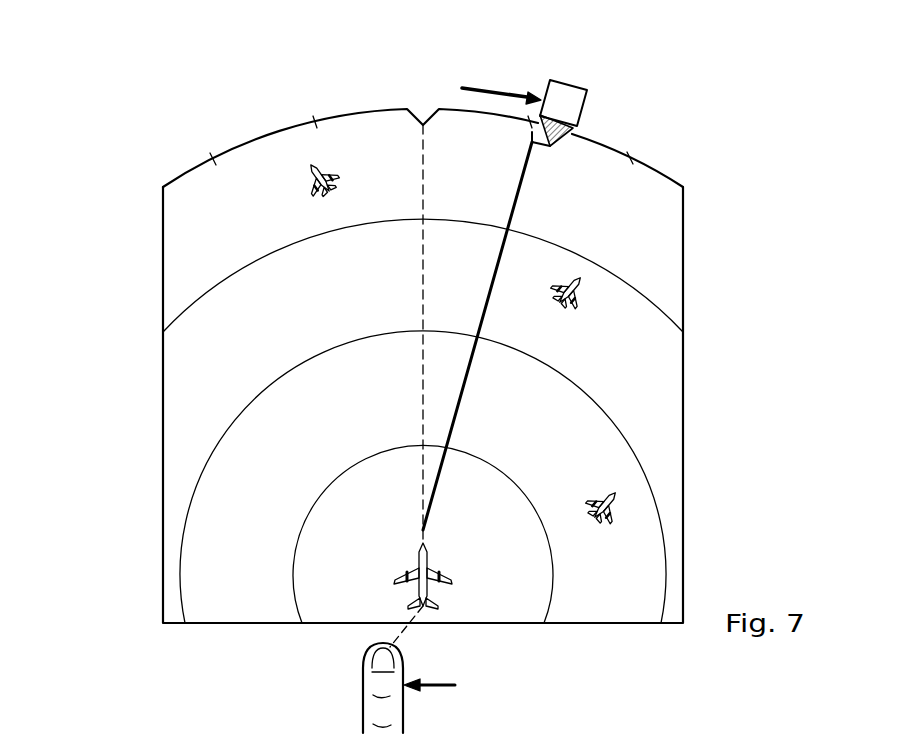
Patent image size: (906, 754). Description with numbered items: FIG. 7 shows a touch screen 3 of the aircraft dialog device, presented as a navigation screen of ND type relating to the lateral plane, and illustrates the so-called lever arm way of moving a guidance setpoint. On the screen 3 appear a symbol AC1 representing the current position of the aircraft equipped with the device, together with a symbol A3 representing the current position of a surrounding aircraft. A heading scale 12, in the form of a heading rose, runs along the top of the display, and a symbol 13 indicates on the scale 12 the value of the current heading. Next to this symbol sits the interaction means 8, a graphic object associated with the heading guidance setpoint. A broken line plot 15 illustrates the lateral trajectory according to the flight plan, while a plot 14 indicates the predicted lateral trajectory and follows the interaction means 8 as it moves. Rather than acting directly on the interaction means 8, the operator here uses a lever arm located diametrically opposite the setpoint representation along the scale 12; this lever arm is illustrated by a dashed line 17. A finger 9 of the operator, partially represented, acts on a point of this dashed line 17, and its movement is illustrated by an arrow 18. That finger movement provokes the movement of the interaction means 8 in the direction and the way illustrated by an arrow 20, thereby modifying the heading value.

The screen 3 is at (100, 417).
The heading scale 12 is at (175, 160).
The Navigation Display ND is at (162, 556).
The broken line plot 15 is at (420, 170).
The plot 14 is at (520, 195).
The interaction means 8 is at (574, 88).
The symbol 13 is at (588, 133).
The arrow 20 is at (500, 88).
The symbol representing the current position of the aircraft AC1 is at (437, 580).
The dashed line 17 is at (385, 600).
The finger 9 is at (363, 697).
The arrow 18 is at (440, 687).
The symbol representing the current position of a surrounding aircraft A3 is at (615, 495).